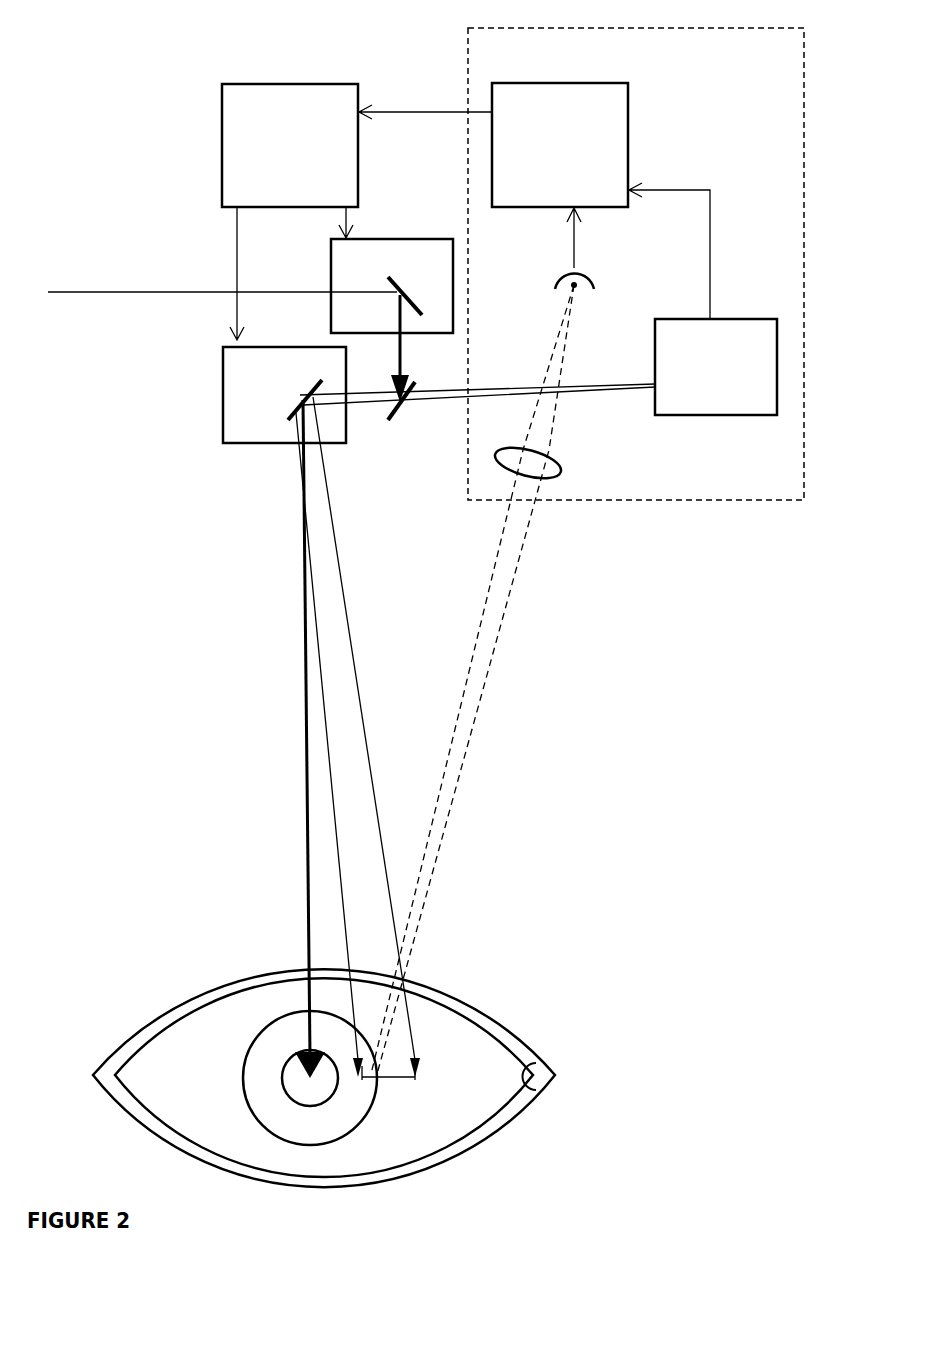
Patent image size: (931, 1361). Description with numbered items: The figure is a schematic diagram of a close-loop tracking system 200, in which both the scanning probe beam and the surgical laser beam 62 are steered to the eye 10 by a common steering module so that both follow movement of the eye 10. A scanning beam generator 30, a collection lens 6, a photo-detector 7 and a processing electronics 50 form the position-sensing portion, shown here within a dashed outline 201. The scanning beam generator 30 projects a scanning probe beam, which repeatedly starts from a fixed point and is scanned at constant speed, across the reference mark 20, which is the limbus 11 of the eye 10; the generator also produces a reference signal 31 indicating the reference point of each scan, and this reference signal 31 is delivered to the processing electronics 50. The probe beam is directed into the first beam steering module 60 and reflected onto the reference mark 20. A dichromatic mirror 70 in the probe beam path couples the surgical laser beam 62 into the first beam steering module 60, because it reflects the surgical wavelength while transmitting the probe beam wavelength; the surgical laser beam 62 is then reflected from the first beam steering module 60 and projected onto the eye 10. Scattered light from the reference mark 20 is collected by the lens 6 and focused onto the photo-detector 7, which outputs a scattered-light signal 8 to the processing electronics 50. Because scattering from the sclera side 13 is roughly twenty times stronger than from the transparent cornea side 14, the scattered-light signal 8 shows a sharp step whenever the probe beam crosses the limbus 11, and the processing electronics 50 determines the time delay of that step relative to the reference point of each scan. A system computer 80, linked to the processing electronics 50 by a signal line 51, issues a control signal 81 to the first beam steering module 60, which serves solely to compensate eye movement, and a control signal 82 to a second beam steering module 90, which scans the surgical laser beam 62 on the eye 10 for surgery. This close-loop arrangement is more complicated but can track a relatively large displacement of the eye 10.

The close-loop tracking system 200 is at (150, 98).
The eye tracking subsystem 201 is at (796, 162).
The system computer 80 is at (318, 83).
The control signal 81 is at (236, 250).
The control signal 82 is at (348, 228).
The signal line 51 is at (427, 110).
The processing electronics 50 is at (612, 105).
The reference signal 31 is at (710, 209).
The scanning beam generator 30 is at (752, 318).
The second beam steering module 90 is at (331, 262).
The first beam steering module 60 is at (223, 380).
The dichromatic mirror 70 is at (387, 425).
The photo-detector 7 is at (588, 271).
The scattered-light signal 8 is at (572, 248).
The collection lens 6 is at (565, 470).
The surgical laser beam 62 is at (306, 685).
The eye 10 is at (532, 976).
The sclera side 13 is at (392, 1100).
The reference mark 20 is at (271, 1015).
The limbus 11 is at (265, 1125).
The cornea side 14 is at (358, 1093).